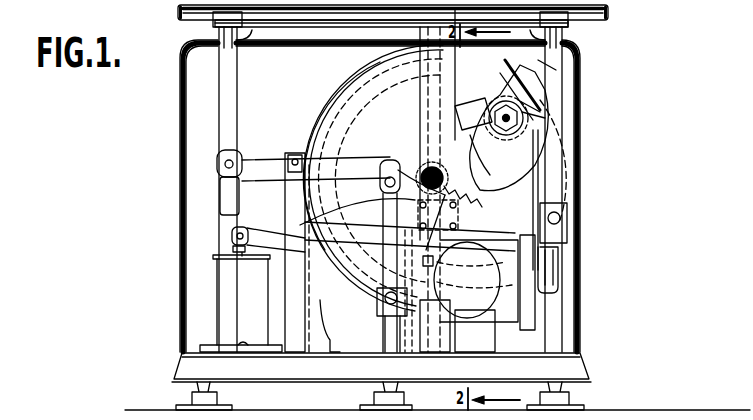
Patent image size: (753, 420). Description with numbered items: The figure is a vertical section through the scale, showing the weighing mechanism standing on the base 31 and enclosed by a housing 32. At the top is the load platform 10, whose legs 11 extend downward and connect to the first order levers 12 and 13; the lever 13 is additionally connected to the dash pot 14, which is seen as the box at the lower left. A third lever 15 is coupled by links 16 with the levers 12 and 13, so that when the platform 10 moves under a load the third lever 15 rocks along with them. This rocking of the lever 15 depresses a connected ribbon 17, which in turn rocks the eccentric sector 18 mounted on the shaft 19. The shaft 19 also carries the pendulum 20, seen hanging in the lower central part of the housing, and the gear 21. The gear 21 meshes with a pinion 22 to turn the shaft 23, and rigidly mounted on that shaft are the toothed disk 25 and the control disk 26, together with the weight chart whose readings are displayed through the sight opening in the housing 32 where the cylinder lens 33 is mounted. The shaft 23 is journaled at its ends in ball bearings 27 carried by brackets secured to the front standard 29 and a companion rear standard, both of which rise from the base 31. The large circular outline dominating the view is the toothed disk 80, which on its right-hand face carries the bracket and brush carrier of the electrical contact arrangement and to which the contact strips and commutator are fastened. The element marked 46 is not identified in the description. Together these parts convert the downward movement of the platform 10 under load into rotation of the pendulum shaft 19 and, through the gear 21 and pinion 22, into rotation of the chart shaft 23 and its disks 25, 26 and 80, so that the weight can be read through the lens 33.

The load platform 10 is at (180, 16).
The legs 11 is at (228, 92).
The first order lever 12 is at (263, 160).
The first order lever 13 is at (270, 232).
The dash pot 14 is at (226, 298).
The third lever 15 is at (560, 291).
The links 16 is at (388, 255).
The ribbon 17 is at (525, 106).
The eccentric sector 18 is at (530, 113).
The shaft 19 is at (520, 121).
The pendulum 20 is at (474, 314).
The gear 21 is at (490, 130).
The pinion 22 is at (432, 232).
The shaft 23 is at (424, 168).
The toothed disk 25 is at (395, 118).
The control disk 26 is at (334, 126).
The ball bearings 27 is at (428, 184).
The front standard 29 is at (443, 81).
The base 31 is at (344, 356).
The housing 32 is at (183, 189).
The cylinder lens 33 is at (545, 68).
The upper strip 46 is at (420, 26).
The toothed disk 80 is at (350, 95).